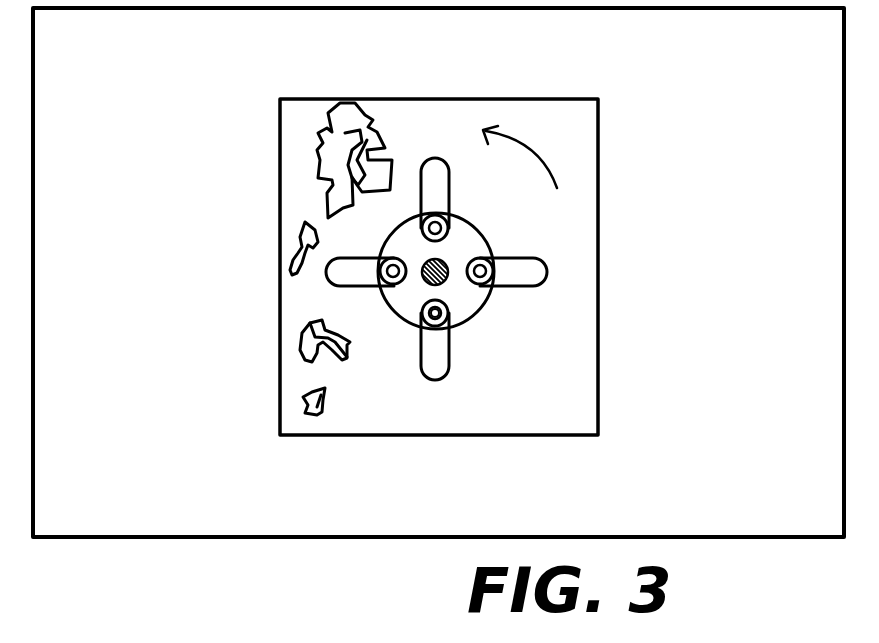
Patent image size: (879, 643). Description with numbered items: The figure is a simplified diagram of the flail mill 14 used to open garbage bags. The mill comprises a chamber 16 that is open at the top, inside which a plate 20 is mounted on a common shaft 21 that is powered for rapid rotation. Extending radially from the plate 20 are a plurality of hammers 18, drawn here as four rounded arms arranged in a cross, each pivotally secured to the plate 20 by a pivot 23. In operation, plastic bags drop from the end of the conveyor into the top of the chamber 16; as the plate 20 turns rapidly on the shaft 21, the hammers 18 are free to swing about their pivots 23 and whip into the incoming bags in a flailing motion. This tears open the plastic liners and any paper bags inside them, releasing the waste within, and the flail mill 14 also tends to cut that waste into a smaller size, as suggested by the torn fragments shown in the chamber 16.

The flail mill 14 is at (140, 55).
The chamber 16 is at (600, 158).
The hammers 18 is at (444, 182).
The plates 20 is at (486, 238).
The shaft 21 is at (450, 283).
The pivots 23 is at (428, 314).